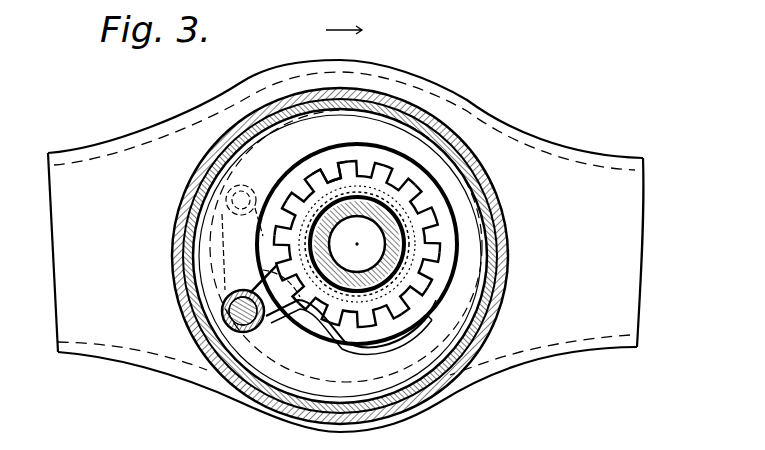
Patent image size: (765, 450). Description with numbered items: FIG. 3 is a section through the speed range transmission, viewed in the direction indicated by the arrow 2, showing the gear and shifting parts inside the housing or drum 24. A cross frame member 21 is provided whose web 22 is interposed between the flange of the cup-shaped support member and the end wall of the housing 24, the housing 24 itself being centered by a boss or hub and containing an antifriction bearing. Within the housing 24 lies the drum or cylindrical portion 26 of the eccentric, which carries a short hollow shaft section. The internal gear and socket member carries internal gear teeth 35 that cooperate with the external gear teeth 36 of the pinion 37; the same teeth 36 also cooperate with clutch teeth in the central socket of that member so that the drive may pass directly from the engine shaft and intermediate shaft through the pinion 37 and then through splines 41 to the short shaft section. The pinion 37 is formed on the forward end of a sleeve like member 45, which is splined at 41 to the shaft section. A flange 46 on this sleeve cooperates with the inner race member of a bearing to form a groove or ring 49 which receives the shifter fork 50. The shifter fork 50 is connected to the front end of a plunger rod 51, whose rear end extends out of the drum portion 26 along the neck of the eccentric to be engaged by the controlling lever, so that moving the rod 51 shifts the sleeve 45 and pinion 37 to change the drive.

The section view arrow 2 is at (344, 19).
The cross frame member 21 is at (617, 348).
The web 22 is at (168, 344).
The housing or drum 24 is at (403, 98).
The drum or cylindrical portion 26 is at (373, 98).
The internal gear teeth 35 is at (380, 166).
The external gear teeth 36 is at (406, 176).
The pinion 37 is at (310, 240).
The splines 41 is at (300, 195).
The sleeve like member 45 is at (340, 326).
The flange 46 is at (343, 170).
The groove or ring 49 is at (425, 308).
The shifter fork 50 is at (383, 322).
The plunger rod 51 is at (262, 322).